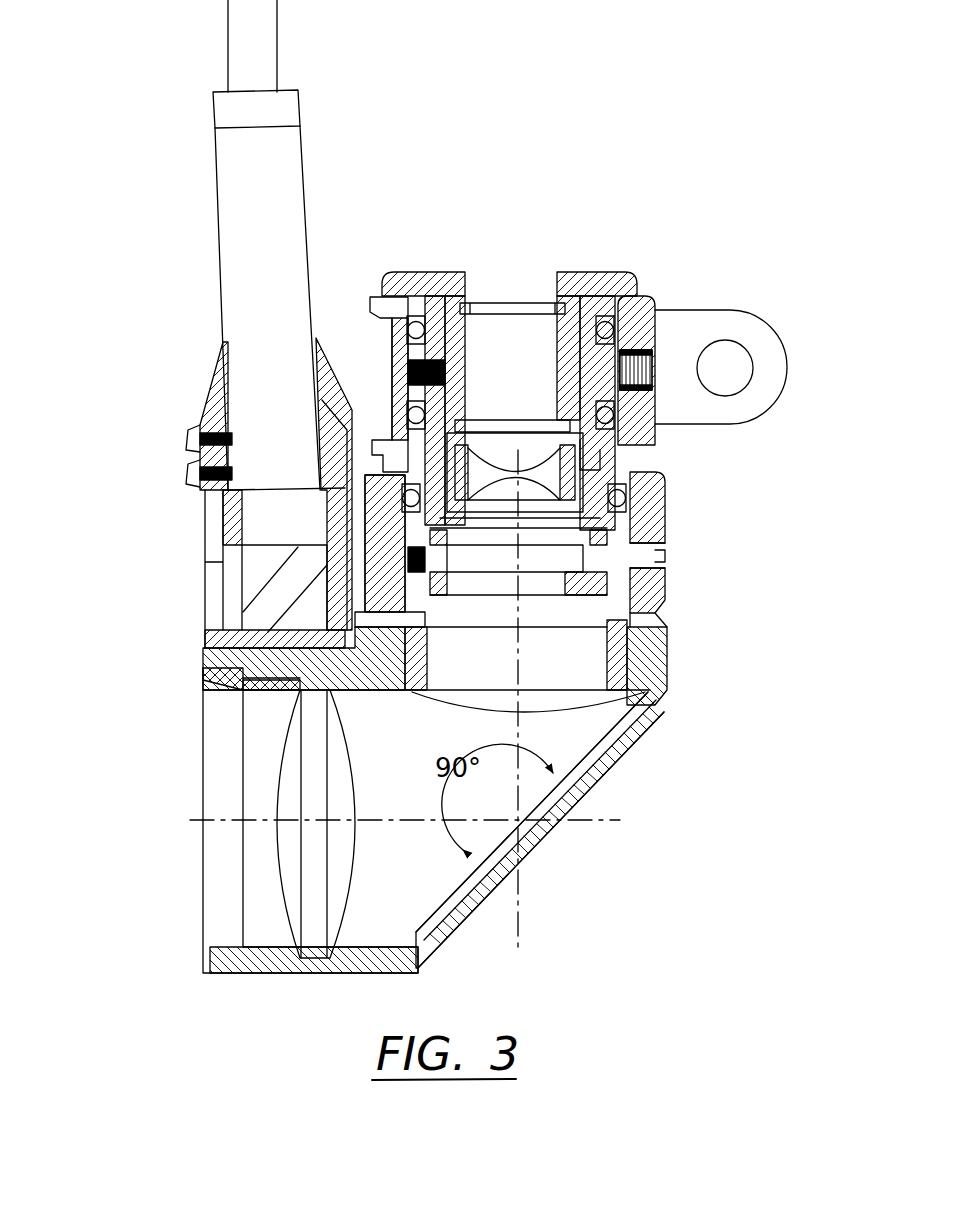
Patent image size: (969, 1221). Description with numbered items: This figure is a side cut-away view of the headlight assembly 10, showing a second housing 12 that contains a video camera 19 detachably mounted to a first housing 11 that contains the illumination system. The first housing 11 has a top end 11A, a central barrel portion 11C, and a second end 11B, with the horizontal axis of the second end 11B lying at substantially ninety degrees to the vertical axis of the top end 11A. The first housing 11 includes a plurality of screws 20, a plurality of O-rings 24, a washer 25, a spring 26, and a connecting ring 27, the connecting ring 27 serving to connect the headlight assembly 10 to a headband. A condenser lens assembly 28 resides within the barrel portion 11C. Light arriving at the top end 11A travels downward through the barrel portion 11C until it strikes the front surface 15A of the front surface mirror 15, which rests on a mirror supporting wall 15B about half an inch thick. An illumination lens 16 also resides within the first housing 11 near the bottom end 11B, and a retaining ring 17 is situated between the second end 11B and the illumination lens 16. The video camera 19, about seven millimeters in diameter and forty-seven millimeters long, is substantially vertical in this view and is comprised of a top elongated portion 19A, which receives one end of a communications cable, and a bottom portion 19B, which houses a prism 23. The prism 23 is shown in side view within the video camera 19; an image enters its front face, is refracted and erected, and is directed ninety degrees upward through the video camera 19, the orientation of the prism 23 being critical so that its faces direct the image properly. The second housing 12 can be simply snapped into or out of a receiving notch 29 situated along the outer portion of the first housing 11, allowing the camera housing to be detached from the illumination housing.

The headlight assembly 10 is at (725, 108).
The first housing 11 is at (807, 283).
The top end 11A is at (527, 272).
The second end 11B is at (205, 822).
The central barrel portion 11C is at (687, 460).
The second housing 12 is at (222, 350).
The front surface mirror 15 is at (548, 835).
The front surface 15A is at (448, 890).
The mirror supporting wall 15B is at (465, 902).
The illumination lens 16 is at (297, 887).
The retaining ring 17 is at (218, 938).
The video camera 19 is at (190, 218).
The top elongated portion 19A is at (238, 60).
The bottom portion 19B is at (220, 292).
The screws 20 is at (390, 305).
The prism 23 is at (258, 575).
The O-rings 24 is at (620, 292).
The washer 25 is at (430, 300).
The spring 26 is at (470, 308).
The connecting ring 27 is at (752, 335).
The condenser lens assembly 28 is at (662, 702).
The receiving notch 29 is at (325, 345).